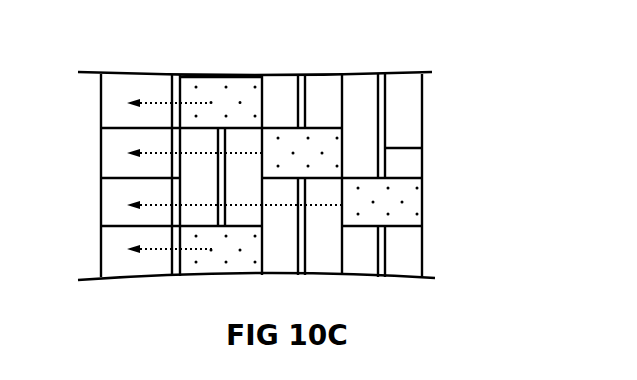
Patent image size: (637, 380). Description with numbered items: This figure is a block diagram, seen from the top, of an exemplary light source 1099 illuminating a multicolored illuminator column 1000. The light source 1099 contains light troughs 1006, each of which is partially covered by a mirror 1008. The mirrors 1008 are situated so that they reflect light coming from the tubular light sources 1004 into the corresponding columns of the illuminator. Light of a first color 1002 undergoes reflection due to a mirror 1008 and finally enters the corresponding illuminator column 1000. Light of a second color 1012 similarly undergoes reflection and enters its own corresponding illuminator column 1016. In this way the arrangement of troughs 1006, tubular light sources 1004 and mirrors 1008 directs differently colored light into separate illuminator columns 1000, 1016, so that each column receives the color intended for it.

The light source 1099 is at (515, 70).
The multicolored illuminator column 1000 is at (110, 162).
The light of a first color 1002 is at (157, 102).
The light of a second color 1012 is at (157, 207).
The illuminator column 1016 is at (110, 202).
The light trough 1006 is at (422, 110).
The tubular light source 1004 is at (422, 148).
The mirror 1008 is at (422, 203).